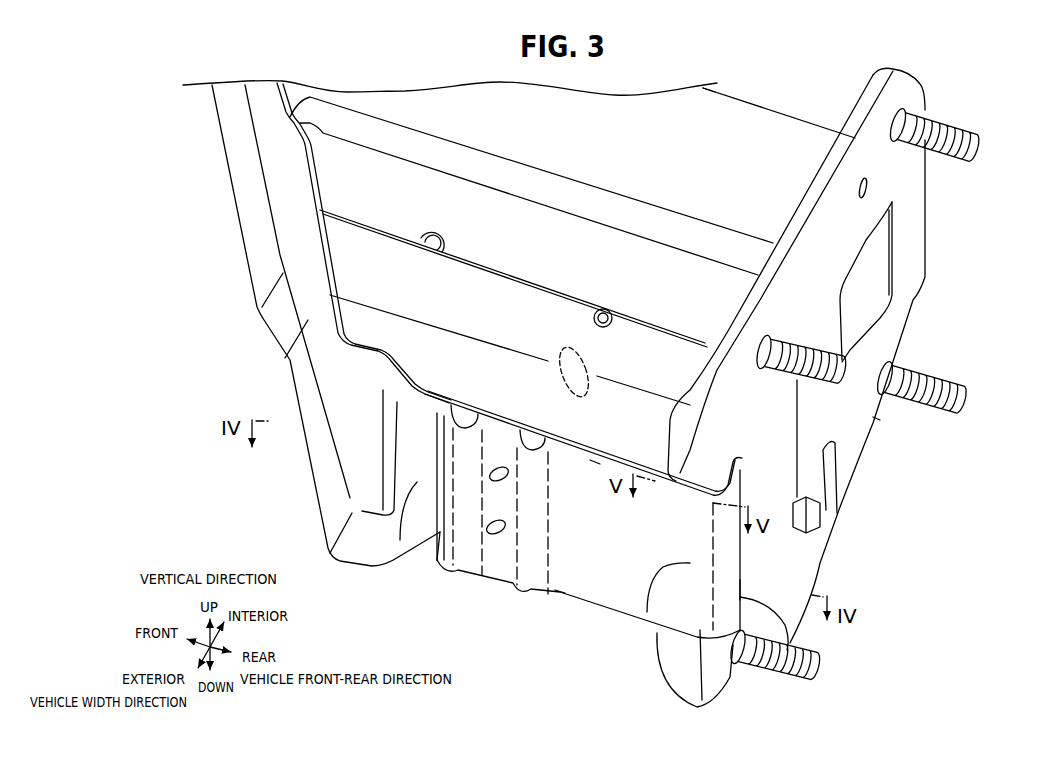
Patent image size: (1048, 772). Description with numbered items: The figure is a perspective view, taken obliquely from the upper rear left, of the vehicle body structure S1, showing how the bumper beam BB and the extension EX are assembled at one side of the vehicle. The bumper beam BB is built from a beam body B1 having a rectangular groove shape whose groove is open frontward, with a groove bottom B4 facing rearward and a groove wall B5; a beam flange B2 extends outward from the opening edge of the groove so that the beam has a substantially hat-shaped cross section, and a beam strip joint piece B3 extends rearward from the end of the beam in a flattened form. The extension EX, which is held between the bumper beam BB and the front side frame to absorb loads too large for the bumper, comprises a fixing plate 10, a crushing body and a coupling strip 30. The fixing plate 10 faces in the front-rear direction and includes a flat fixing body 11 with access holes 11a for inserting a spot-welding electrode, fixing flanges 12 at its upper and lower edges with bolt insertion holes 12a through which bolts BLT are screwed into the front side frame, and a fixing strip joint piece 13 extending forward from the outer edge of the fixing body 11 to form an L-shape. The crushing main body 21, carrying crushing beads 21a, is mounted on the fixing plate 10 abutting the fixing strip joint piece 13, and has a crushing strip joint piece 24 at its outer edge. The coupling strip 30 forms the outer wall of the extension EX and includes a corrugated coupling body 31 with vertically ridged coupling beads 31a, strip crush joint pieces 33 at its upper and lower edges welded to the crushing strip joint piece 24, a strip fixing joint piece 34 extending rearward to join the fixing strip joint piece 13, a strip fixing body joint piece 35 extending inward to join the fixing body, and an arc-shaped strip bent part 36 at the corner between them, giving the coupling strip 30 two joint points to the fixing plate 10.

The vehicle body structure S1 is at (152, 104).
The beam body B1 is at (262, 102).
The beam flange B2 is at (238, 142).
The bumper beam BB is at (216, 203).
The groove wall B5 is at (302, 253).
The groove bottom B4 is at (390, 407).
The beam strip joint piece B3 is at (433, 543).
The crushing main body 21 is at (470, 105).
The crushing beads 21a is at (603, 311).
The extension EX is at (763, 96).
The crushing strip joint piece 24 is at (465, 410).
The coupling strip 30 is at (573, 620).
The coupling body 31 is at (615, 588).
The coupling beads 31a is at (515, 580).
The strip crush joint piece 33 is at (600, 485).
The strip fixing joint piece 34 is at (647, 612).
The fixing strip joint piece 13 is at (679, 680).
The strip fixing body joint piece 35 is at (742, 580).
The strip bent part 36 is at (775, 615).
The fixing plate 10 is at (926, 217).
The fixing body 11 is at (903, 251).
The access holes 11a is at (878, 228).
The fixing flange 12 is at (873, 417).
The bolt insertion holes 12a is at (910, 117).
The bolts BLT is at (957, 127).